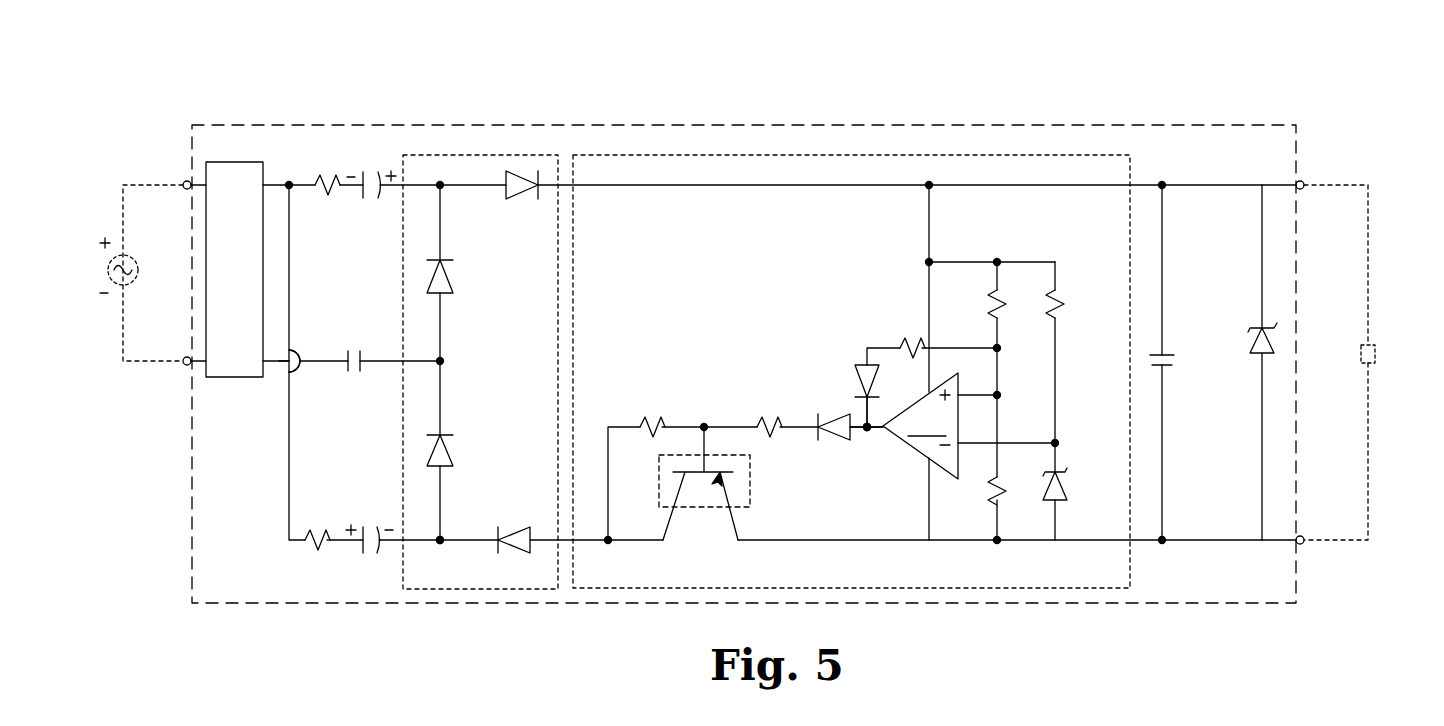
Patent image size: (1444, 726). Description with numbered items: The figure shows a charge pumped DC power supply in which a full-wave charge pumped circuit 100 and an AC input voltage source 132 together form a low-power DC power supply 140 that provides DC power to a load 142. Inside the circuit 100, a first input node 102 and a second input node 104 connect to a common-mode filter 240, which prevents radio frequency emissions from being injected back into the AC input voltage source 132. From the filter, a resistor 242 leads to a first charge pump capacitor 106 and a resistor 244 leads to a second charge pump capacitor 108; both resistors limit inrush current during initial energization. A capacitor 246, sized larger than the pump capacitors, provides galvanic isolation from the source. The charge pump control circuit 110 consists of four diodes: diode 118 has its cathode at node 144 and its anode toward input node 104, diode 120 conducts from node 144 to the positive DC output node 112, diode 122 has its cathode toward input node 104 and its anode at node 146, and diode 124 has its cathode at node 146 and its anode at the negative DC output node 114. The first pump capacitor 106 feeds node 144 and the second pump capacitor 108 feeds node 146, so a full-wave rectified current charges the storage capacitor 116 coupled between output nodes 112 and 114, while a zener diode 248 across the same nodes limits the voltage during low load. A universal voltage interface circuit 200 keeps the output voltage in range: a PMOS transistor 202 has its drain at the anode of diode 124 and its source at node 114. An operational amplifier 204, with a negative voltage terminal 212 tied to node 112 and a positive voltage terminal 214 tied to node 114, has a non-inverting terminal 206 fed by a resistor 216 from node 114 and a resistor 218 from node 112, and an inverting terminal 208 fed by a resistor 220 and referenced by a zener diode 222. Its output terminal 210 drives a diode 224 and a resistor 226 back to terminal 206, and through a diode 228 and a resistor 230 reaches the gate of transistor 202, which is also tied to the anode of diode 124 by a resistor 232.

The low-power DC power supply 140 is at (268, 68).
The full-wave charge pumped circuit 100 is at (359, 125).
The node 144 is at (441, 184).
The universal voltage interface circuit 200 is at (650, 155).
The first input node 102 is at (186, 181).
The second input node 104 is at (186, 365).
The positive DC output node 112 is at (1302, 181).
The negative DC output node 114 is at (1302, 544).
The AC input voltage source 132 is at (140, 270).
The common-mode filter 240 is at (212, 162).
The resistor 242 is at (330, 180).
The first charge pump capacitor 106 is at (372, 198).
The diode 120 is at (520, 196).
The diode 118 is at (448, 276).
The diode 122 is at (448, 450).
The charge pump control circuit 110 is at (403, 328).
The capacitor 246 is at (356, 374).
The resistor 244 is at (308, 548).
The second charge pump capacitor 108 is at (368, 527).
The node 146 is at (440, 544).
The diode 124 is at (518, 527).
The resistor 232 is at (650, 418).
The resistor 230 is at (762, 418).
The diode 228 is at (838, 414).
The p-channel metal-oxide field effect transistor 202 is at (750, 490).
The operational amplifier 204 is at (920, 426).
The non-inverting terminal 206 is at (968, 395).
The inverting terminal 208 is at (965, 445).
The output terminal 210 is at (880, 430).
The positive voltage terminal 214 is at (925, 462).
The resistor 218 is at (990, 298).
The resistor 220 is at (1062, 302).
The resistor 226 is at (905, 340).
The diode 224 is at (856, 378).
The negative voltage terminal 212 is at (929, 392).
The resistor 216 is at (990, 486).
The zener diode 222 is at (1067, 482).
The storage capacitor 116 is at (1175, 360).
The zener diode 248 is at (1257, 358).
The load 142 is at (1375, 354).